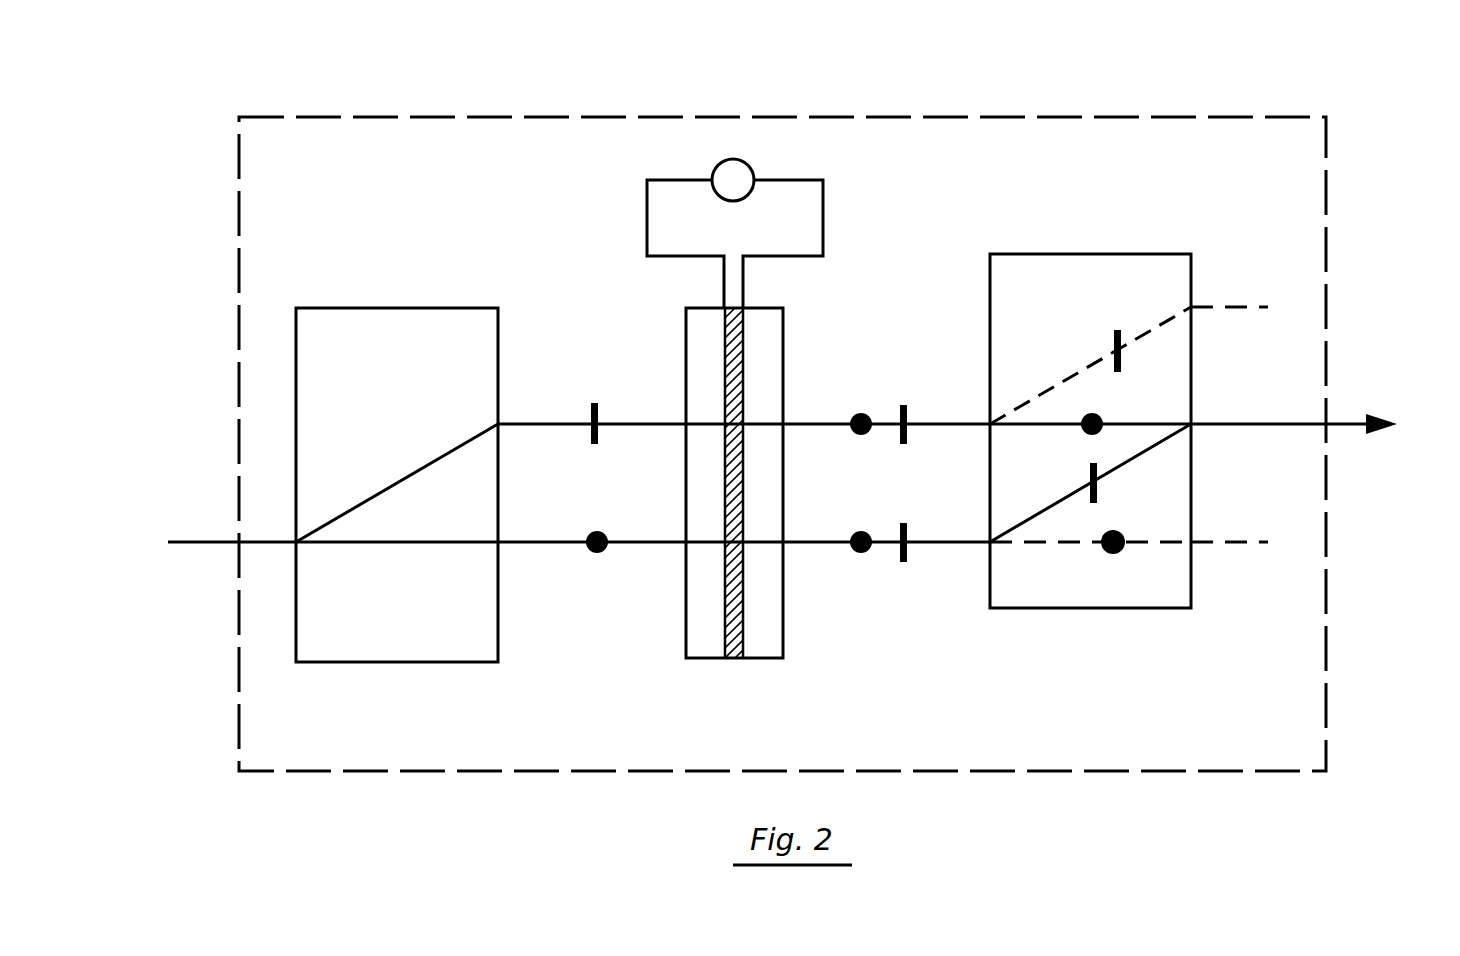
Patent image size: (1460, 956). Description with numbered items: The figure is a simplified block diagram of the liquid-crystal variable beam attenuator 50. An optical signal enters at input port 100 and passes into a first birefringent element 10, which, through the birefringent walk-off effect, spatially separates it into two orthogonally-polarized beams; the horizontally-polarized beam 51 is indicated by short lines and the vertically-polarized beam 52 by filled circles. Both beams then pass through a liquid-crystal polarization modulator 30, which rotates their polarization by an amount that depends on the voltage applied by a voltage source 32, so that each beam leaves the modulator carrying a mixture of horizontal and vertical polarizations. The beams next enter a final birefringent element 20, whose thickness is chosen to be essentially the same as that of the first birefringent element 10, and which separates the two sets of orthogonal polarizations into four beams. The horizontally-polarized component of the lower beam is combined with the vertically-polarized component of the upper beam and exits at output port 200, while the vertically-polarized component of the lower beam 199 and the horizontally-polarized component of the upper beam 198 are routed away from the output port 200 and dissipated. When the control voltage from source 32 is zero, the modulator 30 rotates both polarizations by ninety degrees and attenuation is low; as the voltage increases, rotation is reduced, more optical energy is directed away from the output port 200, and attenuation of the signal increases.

The first birefringent element 10 is at (420, 663).
The final birefringent element 20 is at (1122, 610).
The liquid-crystal polarization modulator 30 is at (758, 661).
The voltage source 32 is at (752, 165).
The liquid-crystal variable beam attenuator 50 is at (1140, 117).
The horizontally-polarized beam 51 is at (599, 414).
The vertically-polarized beam 52 is at (600, 553).
The input port 100 is at (178, 540).
The horizontally-polarized component of the upper beam 198 is at (1232, 306).
The vertically-polarized component of the lower beam 199 is at (1245, 545).
The output port 200 is at (1380, 412).